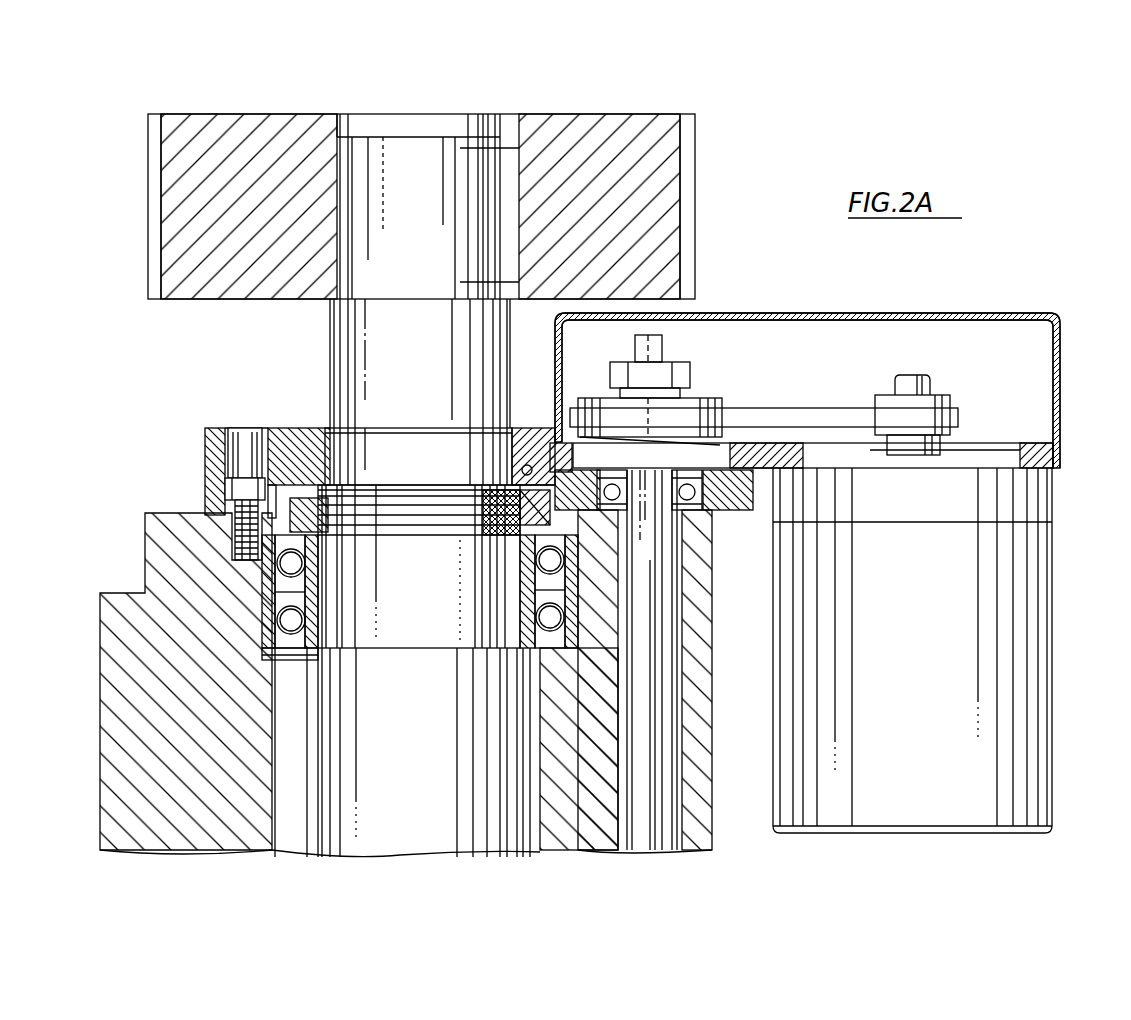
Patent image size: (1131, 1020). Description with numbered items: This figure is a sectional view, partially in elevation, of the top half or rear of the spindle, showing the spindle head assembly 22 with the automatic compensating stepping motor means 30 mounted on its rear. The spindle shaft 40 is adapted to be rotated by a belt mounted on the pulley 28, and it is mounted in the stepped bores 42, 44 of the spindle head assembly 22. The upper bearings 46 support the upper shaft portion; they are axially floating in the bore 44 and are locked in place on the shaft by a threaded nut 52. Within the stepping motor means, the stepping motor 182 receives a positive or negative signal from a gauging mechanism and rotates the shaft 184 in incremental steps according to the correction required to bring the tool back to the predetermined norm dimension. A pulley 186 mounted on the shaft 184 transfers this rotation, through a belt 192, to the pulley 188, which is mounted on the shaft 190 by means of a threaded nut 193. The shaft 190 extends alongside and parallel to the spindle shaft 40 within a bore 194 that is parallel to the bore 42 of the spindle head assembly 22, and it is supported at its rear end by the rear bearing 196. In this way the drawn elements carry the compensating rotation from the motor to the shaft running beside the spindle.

The spindle head assembly 22 is at (150, 546).
The pulley 28 is at (626, 126).
The automatic compensating stepping motor means 30 is at (987, 311).
The spindle shaft 40 is at (340, 392).
The stepped bore 42 is at (290, 757).
The stepped bore 44 is at (270, 656).
The upper bearings 46 is at (330, 626).
The threaded nut 52 is at (492, 530).
The stepping motor 182 is at (1047, 500).
The shaft 184 is at (920, 376).
The pulley 186 is at (952, 405).
The pulley 188 is at (722, 410).
The shaft 190 is at (660, 620).
The belt 192 is at (827, 408).
The threaded nut 193 is at (690, 382).
The bore 194 is at (680, 757).
The rear bearing 196 is at (708, 515).